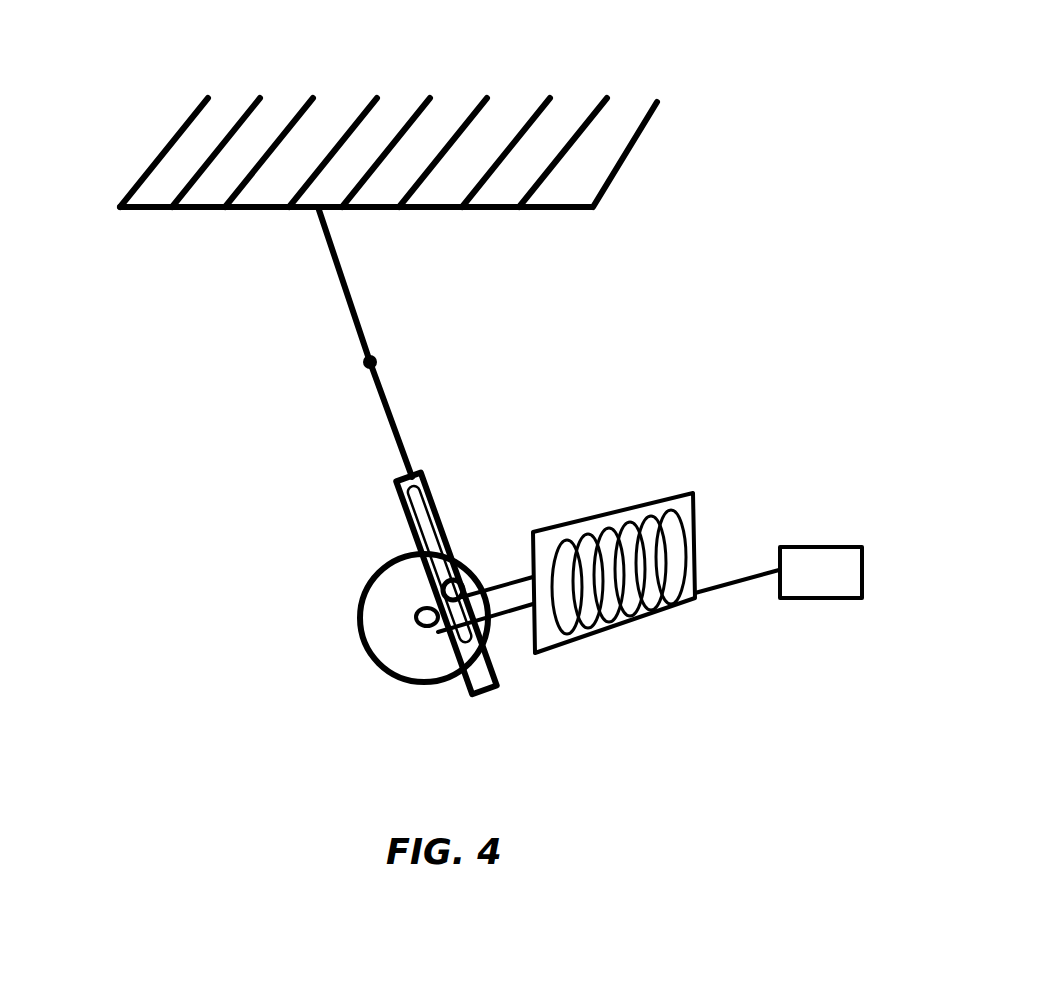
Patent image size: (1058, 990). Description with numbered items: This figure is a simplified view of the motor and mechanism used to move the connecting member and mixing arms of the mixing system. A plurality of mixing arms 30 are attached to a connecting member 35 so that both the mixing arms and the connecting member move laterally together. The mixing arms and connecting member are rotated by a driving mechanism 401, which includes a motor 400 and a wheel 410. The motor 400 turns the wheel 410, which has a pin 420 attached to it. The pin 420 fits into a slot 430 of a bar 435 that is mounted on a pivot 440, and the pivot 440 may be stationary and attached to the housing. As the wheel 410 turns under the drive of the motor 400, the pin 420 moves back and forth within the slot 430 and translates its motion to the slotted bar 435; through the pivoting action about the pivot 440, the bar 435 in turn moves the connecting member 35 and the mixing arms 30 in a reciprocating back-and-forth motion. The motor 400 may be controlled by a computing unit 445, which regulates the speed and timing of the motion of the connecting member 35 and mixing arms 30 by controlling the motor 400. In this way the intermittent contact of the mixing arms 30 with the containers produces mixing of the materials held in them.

The mixing arms 30 is at (601, 106).
The connecting member 35 is at (130, 208).
The driving mechanism 401 is at (160, 652).
The pivot 440 is at (362, 364).
The slot 430 is at (398, 497).
The bar 435 is at (412, 533).
The wheel 410 is at (393, 642).
The pin 420 is at (468, 565).
The motor 400 is at (683, 503).
The computing unit 445 is at (821, 572).